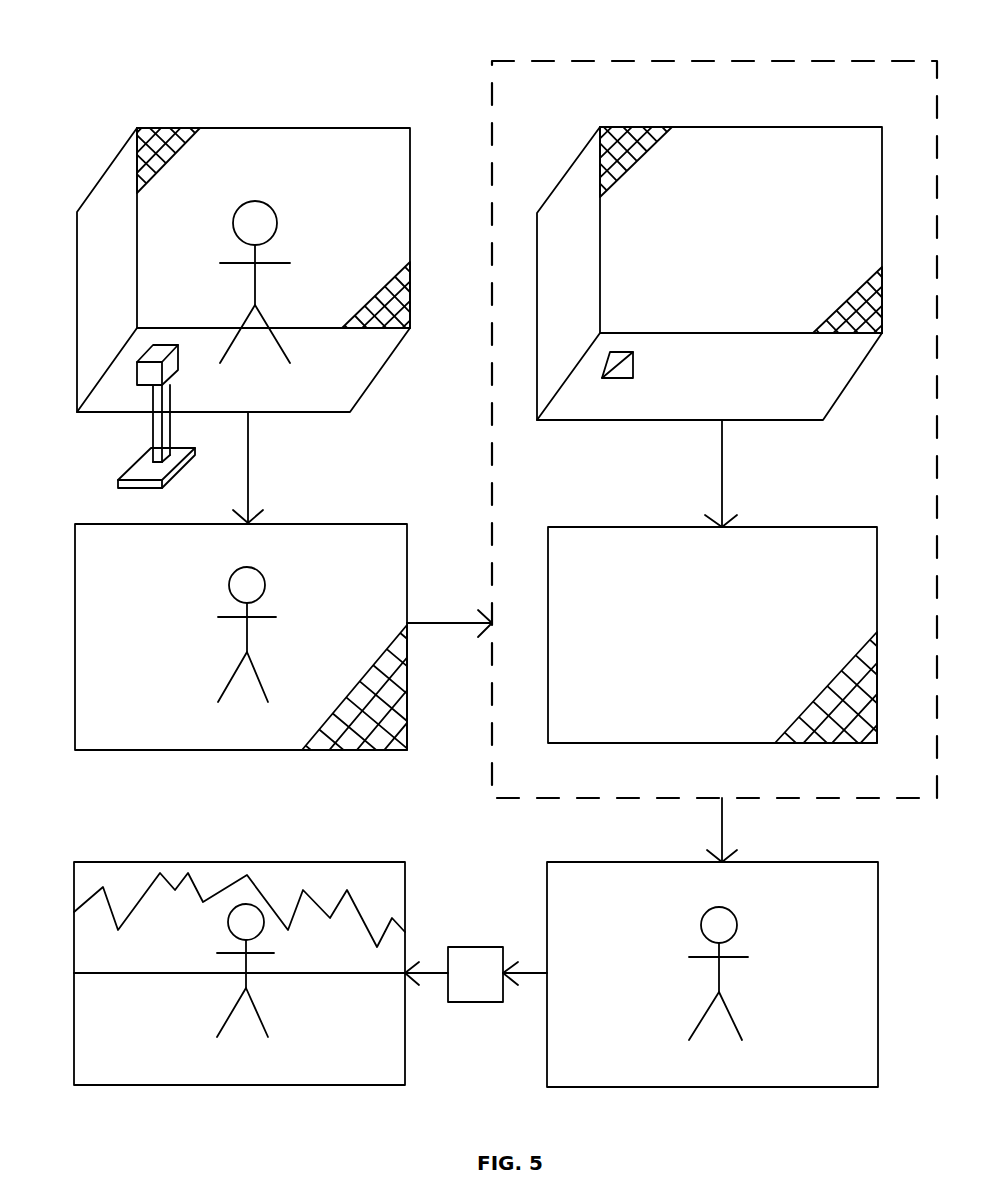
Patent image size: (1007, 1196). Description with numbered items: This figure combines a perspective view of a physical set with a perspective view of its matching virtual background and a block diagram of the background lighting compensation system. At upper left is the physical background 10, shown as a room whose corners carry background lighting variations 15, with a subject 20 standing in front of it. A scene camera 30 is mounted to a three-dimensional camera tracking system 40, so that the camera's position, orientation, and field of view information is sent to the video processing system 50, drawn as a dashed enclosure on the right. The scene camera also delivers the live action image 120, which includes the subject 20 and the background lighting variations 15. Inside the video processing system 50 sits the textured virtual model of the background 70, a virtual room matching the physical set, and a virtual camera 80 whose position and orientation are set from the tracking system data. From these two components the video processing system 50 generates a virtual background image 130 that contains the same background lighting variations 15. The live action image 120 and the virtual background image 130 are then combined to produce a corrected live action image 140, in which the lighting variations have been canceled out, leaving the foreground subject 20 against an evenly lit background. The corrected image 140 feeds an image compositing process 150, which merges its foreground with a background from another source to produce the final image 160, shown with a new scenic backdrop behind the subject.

The physical background 10 is at (325, 128).
The background lighting variations 15 is at (190, 128).
The subject 20 is at (273, 212).
The scene camera 30 is at (177, 372).
The 3D camera tracking system 40 is at (180, 472).
The video processing system 50 is at (792, 800).
The textured virtual model of the background 70 is at (795, 127).
The virtual camera 80 is at (623, 378).
The live action image 120 is at (337, 523).
The virtual background image 130 is at (793, 527).
The corrected live action image 140 is at (792, 1087).
The image compositing process 150 is at (475, 1002).
The image 160 is at (288, 1085).